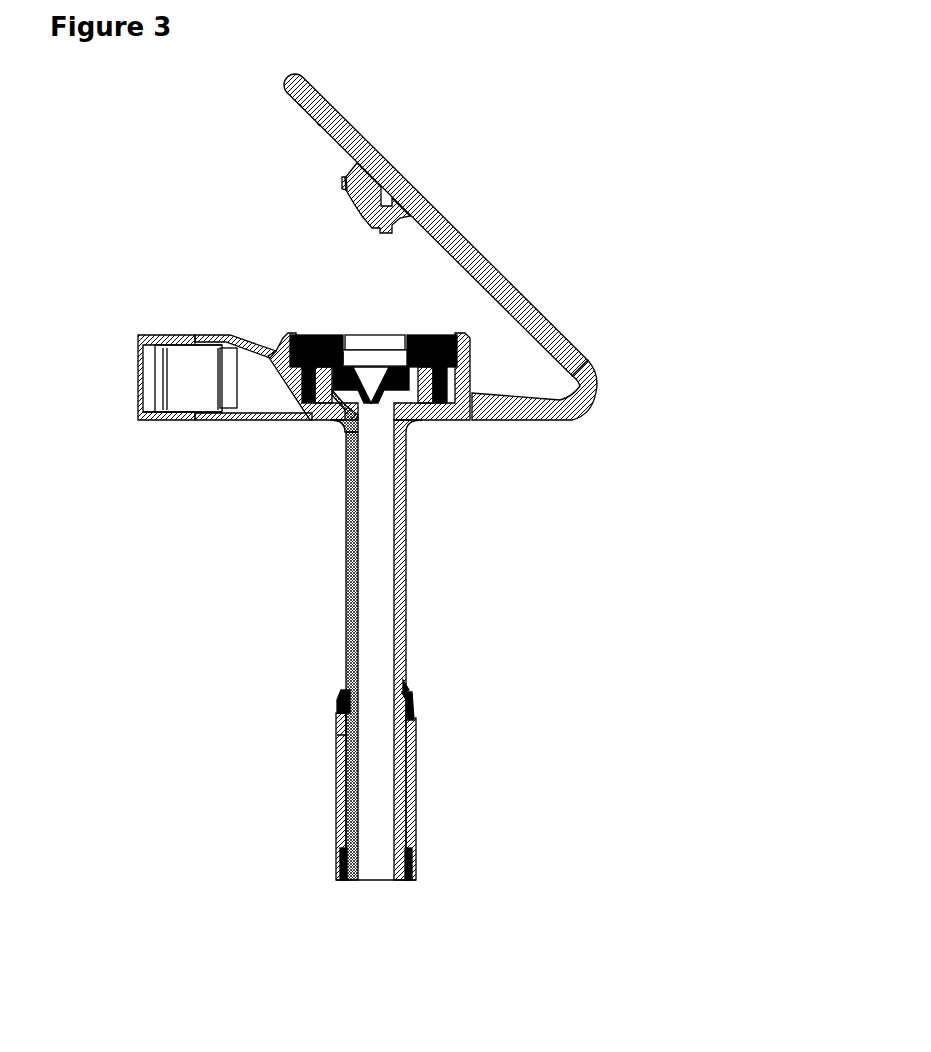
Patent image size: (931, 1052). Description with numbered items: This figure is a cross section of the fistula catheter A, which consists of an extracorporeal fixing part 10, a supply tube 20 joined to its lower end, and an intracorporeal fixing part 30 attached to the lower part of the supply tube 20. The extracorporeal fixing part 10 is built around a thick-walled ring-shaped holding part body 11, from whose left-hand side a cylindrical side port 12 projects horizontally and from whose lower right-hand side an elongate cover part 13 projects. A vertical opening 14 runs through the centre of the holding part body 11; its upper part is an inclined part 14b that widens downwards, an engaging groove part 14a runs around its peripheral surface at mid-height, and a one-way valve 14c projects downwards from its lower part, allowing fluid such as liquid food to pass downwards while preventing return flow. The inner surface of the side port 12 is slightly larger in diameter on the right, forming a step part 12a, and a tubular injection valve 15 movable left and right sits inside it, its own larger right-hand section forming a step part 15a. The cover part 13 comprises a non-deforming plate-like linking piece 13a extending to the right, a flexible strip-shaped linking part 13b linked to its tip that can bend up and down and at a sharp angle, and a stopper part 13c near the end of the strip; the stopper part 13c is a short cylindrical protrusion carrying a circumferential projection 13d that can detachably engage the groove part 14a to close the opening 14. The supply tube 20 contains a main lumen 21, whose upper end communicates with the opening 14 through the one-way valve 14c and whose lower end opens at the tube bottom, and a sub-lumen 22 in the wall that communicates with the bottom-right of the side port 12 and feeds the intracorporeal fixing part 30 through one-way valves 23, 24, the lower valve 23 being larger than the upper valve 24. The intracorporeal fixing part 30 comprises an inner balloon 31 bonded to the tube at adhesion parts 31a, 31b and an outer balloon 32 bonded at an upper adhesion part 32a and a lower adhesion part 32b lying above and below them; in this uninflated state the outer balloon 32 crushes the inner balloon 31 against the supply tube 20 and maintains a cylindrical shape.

The extracorporeal fixing part 10 is at (243, 213).
The fistula catheter A is at (538, 158).
The holding part body 11 is at (288, 335).
The side port 12 is at (182, 363).
The step part 12a is at (205, 335).
The cover part 13 is at (424, 271).
The linking piece 13a is at (500, 422).
The strip-shaped linking part 13b is at (518, 286).
The stopper part 13c is at (360, 219).
The projection 13d is at (343, 183).
The opening 14 is at (373, 385).
The engaging groove part 14a is at (362, 340).
The inclined part 14b is at (348, 334).
The one-way valve 14c is at (337, 418).
The injection valve 15 is at (155, 401).
The step part 15a is at (182, 421).
The supply tube 20 is at (366, 650).
The main lumen 21 is at (385, 508).
The sub-lumen 22 is at (346, 625).
The one-way valve 23 is at (343, 727).
The one-way valve 24 is at (341, 705).
The intracorporeal fixing part 30 is at (382, 769).
The inner balloon 31 is at (340, 800).
The adhesion part 31a is at (414, 710).
The adhesion part 31b is at (416, 850).
The outer balloon 32 is at (416, 728).
The upper adhesion part 32a is at (408, 690).
The lower adhesion part 32b is at (416, 878).